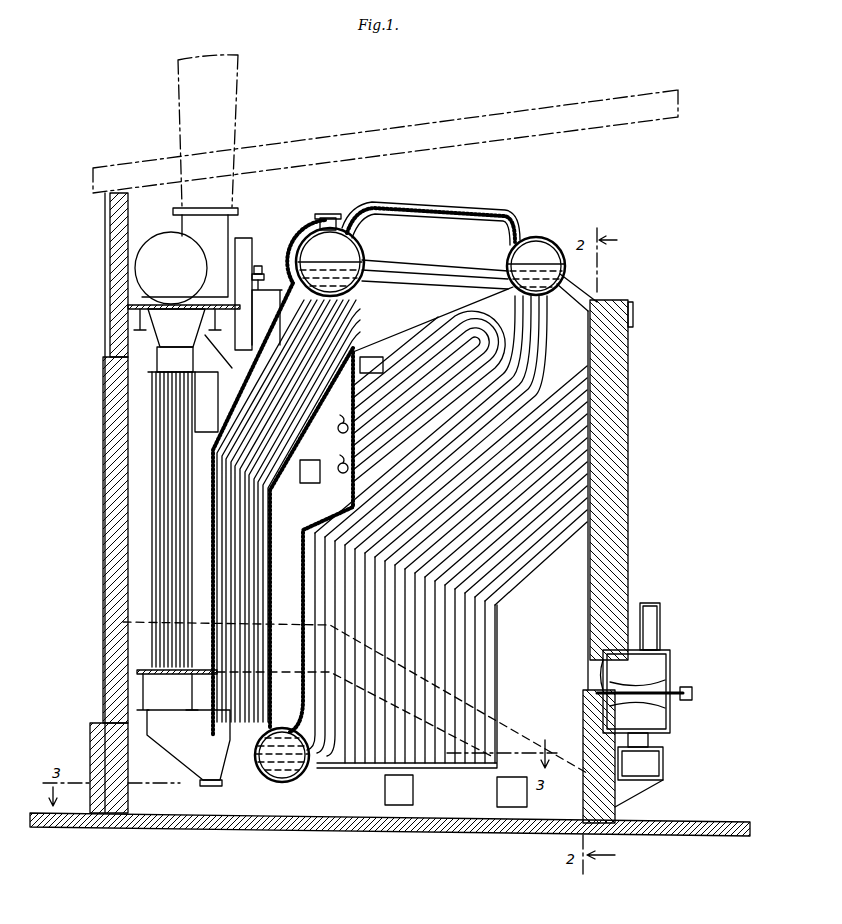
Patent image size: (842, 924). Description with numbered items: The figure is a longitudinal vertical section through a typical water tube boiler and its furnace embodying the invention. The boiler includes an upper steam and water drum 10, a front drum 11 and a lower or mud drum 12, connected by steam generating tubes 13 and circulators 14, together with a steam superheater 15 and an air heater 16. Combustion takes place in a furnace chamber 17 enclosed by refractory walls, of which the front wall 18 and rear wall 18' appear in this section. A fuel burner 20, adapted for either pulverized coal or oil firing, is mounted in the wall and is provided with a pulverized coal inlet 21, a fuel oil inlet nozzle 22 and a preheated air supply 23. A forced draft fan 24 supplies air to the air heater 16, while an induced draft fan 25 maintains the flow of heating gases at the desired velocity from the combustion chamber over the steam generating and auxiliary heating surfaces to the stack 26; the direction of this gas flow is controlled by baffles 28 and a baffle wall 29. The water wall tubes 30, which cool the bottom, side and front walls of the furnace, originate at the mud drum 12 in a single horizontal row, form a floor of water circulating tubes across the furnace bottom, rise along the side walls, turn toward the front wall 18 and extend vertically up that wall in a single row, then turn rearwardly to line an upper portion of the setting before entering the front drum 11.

The upper steam and water drum 10 is at (316, 228).
The front drum 11 is at (533, 235).
The lower or mud drum 12 is at (278, 780).
The steam generating tubes 13 is at (365, 300).
The circulators 14 is at (437, 207).
The steam superheater 15 is at (392, 370).
The air heater 16 is at (150, 492).
The furnace chamber 17 is at (438, 532).
The front wall 18 is at (645, 561).
The rear wall 18' is at (86, 503).
The fuel burner 20 is at (670, 717).
The pulverized coal inlet 21 is at (650, 603).
The fuel oil inlet nozzle 22 is at (678, 687).
The preheated air supply 23 is at (653, 743).
The forced draft fan 24 is at (252, 240).
The induced draft fan 25 is at (165, 238).
The stack 26 is at (178, 103).
The baffles 28 is at (348, 398).
The baffle wall 29 is at (260, 268).
The water wall tubes 30 is at (592, 300).